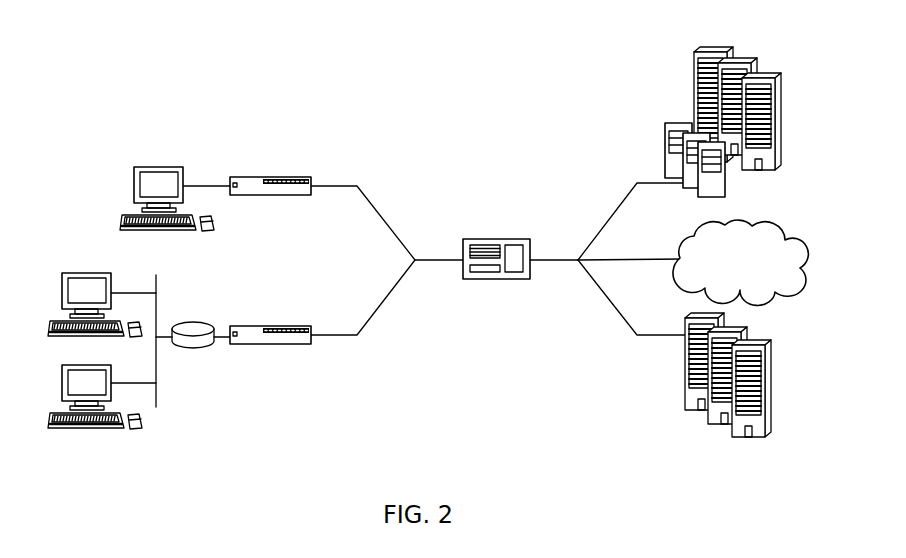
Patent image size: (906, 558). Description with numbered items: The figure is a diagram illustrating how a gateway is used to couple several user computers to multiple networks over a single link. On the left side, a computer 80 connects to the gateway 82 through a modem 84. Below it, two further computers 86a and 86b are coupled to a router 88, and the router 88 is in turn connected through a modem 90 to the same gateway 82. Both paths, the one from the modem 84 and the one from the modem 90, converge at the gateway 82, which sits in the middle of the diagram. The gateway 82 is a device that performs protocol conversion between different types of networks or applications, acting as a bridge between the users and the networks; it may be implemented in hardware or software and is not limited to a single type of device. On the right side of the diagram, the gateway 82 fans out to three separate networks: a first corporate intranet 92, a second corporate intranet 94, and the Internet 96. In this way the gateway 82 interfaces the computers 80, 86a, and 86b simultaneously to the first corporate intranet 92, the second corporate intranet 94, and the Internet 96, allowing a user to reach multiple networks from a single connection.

The computer 80 is at (163, 167).
The gateway 82 is at (500, 239).
The modem 84 is at (272, 177).
The computer 86a is at (85, 273).
The computer 86b is at (85, 432).
The router 88 is at (192, 325).
The modem 90 is at (272, 326).
The first corporate intranet 92 is at (740, 63).
The second corporate intranet 94 is at (757, 345).
The Internet 96 is at (775, 228).